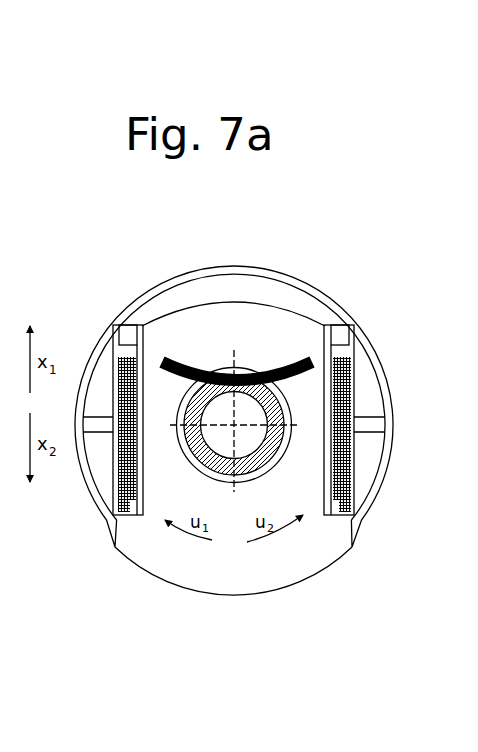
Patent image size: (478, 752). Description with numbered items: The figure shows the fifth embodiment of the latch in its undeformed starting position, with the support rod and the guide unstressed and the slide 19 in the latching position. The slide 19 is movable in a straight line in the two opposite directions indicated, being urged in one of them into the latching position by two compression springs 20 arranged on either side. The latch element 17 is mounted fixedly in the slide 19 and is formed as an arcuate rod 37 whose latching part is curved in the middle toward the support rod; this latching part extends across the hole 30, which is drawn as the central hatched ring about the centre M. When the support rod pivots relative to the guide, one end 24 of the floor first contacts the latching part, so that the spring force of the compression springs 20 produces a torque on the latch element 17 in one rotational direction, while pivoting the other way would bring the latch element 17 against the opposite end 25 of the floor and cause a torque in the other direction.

The latch element 17 is at (183, 348).
The slide 19 is at (278, 560).
The compression springs 20 is at (357, 378).
The end of the floor 24 is at (234, 425).
The end of the floor 25 is at (268, 463).
The hole 30 is at (226, 500).
The arcuate rod 37 is at (256, 360).
The centre point M is at (187, 455).